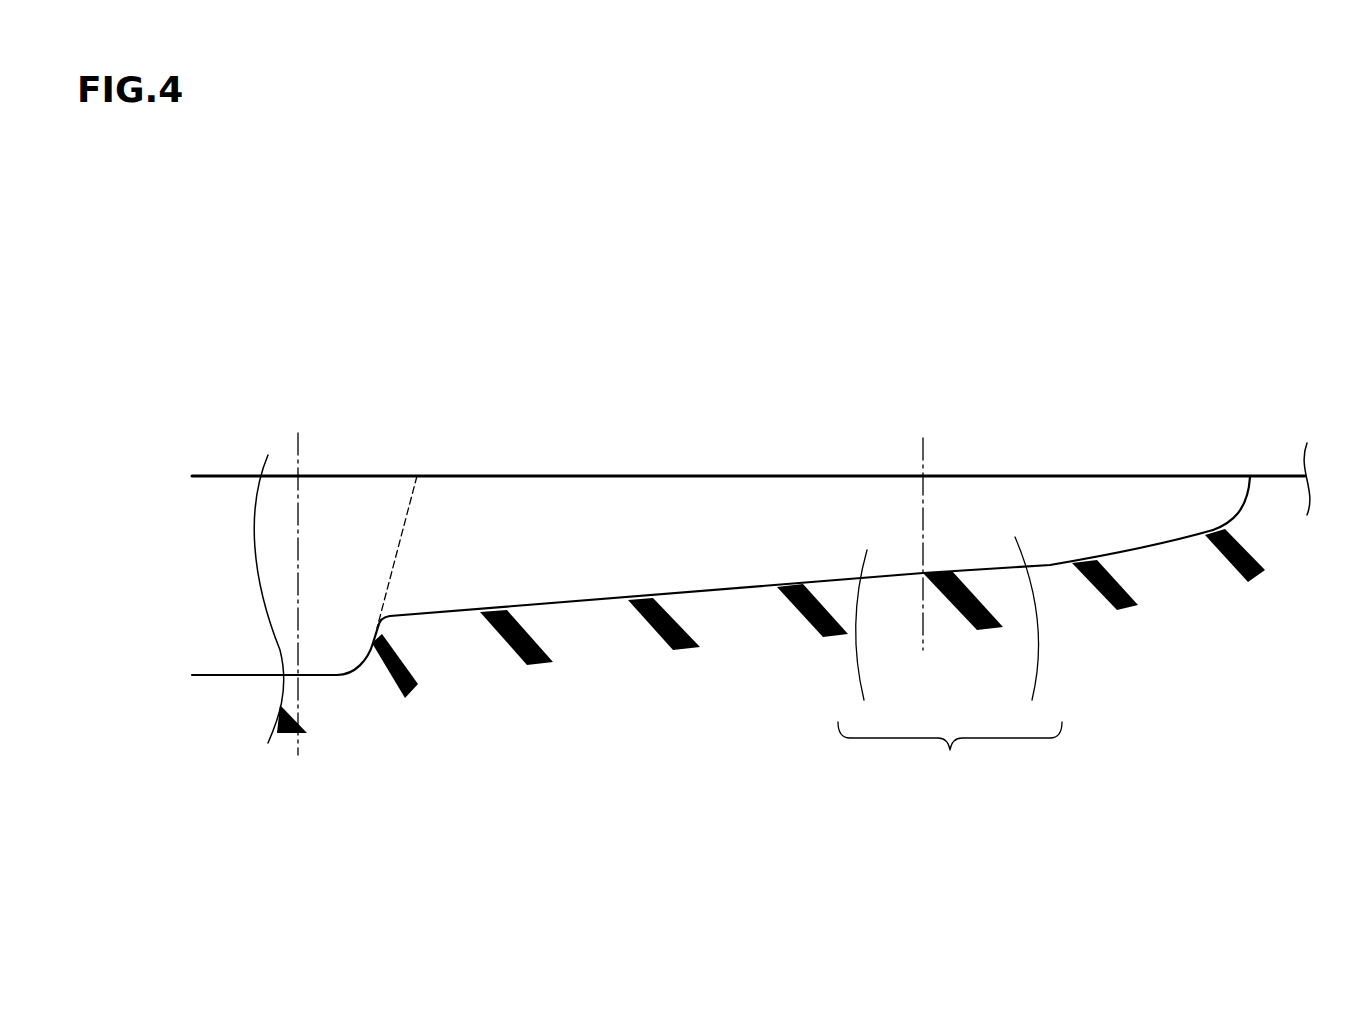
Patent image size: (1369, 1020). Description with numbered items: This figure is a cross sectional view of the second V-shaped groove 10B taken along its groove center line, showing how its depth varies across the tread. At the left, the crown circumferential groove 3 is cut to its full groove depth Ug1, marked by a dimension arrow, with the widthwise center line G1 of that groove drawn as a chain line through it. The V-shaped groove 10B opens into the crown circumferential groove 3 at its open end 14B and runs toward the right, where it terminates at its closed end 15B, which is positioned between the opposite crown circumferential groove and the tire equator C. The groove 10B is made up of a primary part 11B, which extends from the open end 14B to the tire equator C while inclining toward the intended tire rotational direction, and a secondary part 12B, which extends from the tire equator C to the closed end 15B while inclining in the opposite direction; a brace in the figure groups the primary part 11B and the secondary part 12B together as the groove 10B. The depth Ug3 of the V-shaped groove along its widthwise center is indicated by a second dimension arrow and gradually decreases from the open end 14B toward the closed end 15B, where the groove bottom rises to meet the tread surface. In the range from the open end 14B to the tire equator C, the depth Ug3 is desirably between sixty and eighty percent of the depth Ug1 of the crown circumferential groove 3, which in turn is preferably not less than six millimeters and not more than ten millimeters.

The crown circumferential groove 3 is at (333, 508).
The open end 14B is at (397, 507).
The widthwise center line of the crown circumferential groove G1 is at (296, 581).
The groove depth of the crown circumferential groove Ug1 is at (198, 477).
The depth of the V-shaped groove Ug3 is at (587, 477).
The tire equator C is at (923, 529).
The closed end 15B is at (1242, 497).
The primary part 11B is at (870, 642).
The secondary part 12B is at (990, 635).
The second V-shaped groove 10B is at (950, 754).